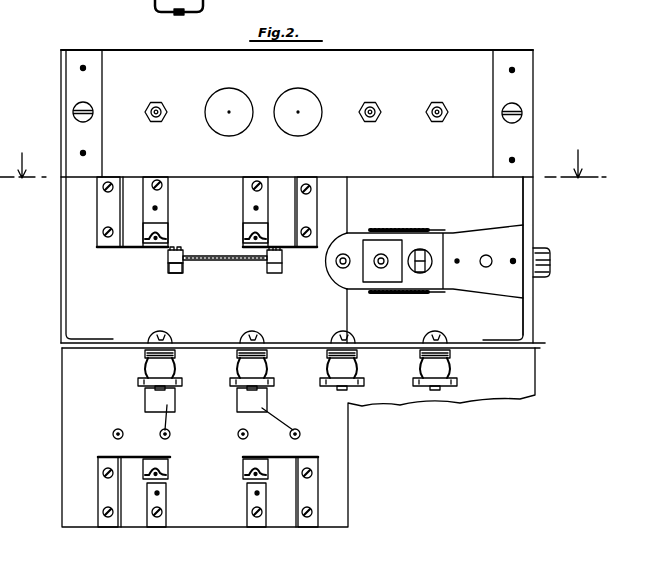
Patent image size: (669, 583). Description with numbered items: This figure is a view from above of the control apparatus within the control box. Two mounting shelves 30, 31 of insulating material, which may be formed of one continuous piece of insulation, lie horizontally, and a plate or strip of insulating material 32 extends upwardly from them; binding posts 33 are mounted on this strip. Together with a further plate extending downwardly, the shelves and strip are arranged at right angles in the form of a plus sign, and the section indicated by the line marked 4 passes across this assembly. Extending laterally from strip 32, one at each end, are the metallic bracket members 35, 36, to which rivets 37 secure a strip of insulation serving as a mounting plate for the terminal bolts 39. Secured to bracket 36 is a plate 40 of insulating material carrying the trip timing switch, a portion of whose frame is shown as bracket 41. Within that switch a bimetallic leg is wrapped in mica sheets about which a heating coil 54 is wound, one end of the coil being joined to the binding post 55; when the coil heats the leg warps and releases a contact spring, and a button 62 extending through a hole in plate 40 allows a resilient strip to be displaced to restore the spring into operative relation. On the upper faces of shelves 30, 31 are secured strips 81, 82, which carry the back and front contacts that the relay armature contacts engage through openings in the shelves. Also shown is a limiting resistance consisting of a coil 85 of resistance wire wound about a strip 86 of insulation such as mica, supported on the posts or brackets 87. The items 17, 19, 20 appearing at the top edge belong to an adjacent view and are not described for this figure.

The section line 4- 4 is at (303, 164).
The lever 17 is at (230, 0).
The bracket 19 is at (157, 8).
The pivot block 20 is at (186, 13).
The mounting shelf 30 is at (62, 256).
The mounting shelf 31 is at (62, 418).
The strip of insulating material 32 is at (72, 345).
The binding posts 33 is at (238, 370).
The metallic bracket member 35 is at (60, 112).
The metallic bracket member 36 is at (533, 135).
The rivets 37 is at (80, 68).
The terminal bolts 39 is at (166, 108).
The plate of insulating material 40 is at (528, 328).
The frame of trip timing switch 41 is at (512, 243).
The heating coil 54 is at (417, 292).
The binding post 55 is at (343, 280).
The button 62 is at (552, 262).
The strips 81 is at (160, 183).
The strips 82 is at (110, 183).
The coil of resistance wire 85 is at (232, 262).
The strip of insulation 86 is at (184, 268).
The posts or brackets 87 is at (170, 265).